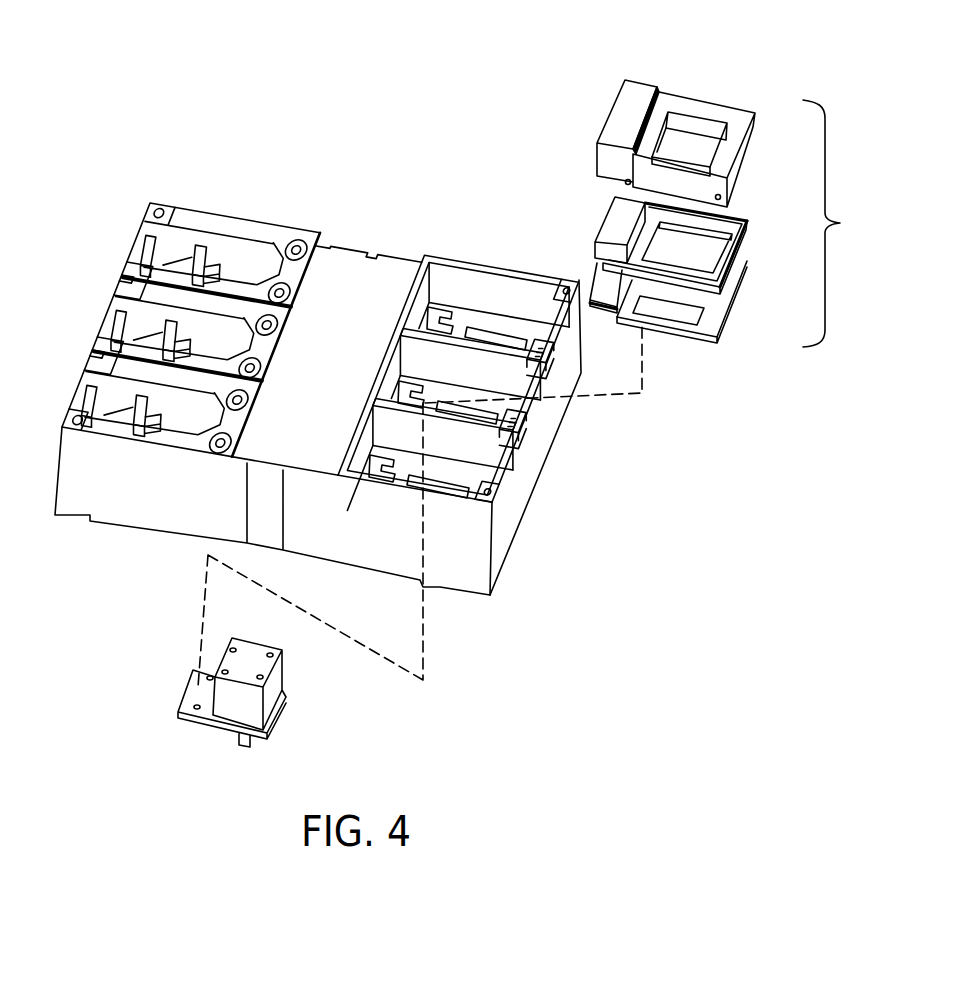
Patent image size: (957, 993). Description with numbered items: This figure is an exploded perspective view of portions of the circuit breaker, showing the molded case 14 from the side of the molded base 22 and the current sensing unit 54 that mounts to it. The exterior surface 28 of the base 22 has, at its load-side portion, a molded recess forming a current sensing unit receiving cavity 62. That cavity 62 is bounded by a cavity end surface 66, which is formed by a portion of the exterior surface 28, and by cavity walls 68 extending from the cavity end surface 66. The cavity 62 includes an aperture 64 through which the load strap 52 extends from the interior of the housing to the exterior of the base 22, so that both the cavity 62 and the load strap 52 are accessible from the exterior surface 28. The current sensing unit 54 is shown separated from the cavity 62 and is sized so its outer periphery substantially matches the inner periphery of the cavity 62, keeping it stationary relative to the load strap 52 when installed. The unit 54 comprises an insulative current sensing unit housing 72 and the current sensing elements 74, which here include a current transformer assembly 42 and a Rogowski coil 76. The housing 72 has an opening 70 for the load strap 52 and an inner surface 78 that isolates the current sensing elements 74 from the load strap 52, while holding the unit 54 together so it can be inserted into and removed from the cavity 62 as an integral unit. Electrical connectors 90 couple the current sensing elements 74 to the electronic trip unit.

The molded case 14 is at (83, 505).
The molded base 22 is at (308, 242).
The exterior surface 28 is at (353, 277).
The current transformer assembly 42 is at (727, 231).
The load strap 52 is at (267, 667).
The current sensing unit 54 is at (723, 218).
The current sensing unit receiving cavity 62 is at (482, 362).
The aperture 64 is at (488, 340).
The cavity end surface 66 is at (463, 318).
The cavity walls 68 is at (529, 297).
The opening 70 is at (706, 157).
The current sensing unit housing 72 is at (641, 78).
The current sensing elements 74 is at (745, 263).
The Rogowski coil 76 is at (688, 341).
The inner surface 78 is at (670, 128).
The electrical connectors 90 is at (596, 282).